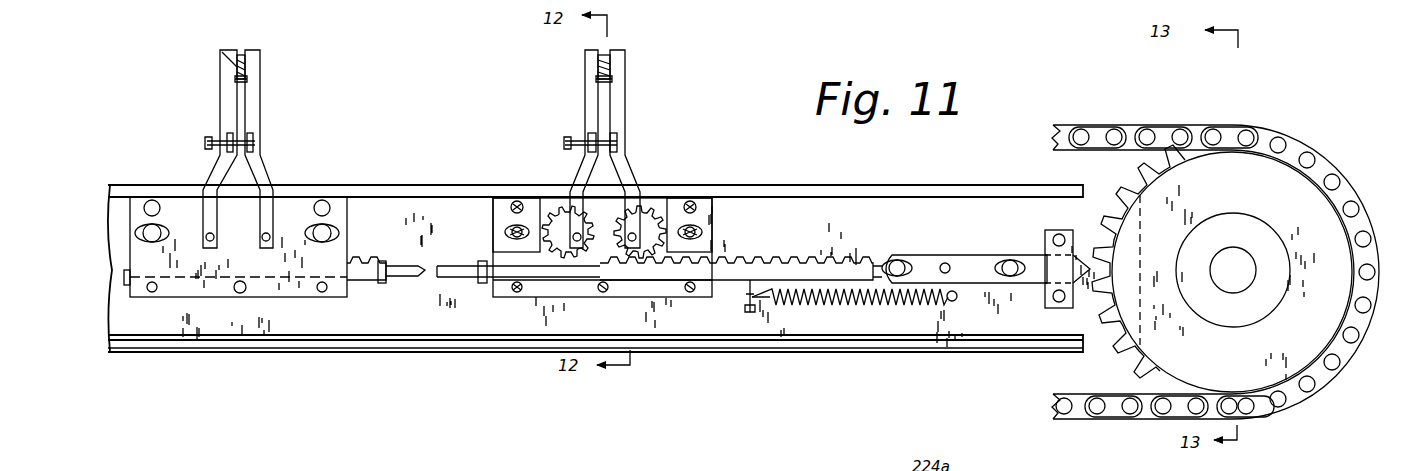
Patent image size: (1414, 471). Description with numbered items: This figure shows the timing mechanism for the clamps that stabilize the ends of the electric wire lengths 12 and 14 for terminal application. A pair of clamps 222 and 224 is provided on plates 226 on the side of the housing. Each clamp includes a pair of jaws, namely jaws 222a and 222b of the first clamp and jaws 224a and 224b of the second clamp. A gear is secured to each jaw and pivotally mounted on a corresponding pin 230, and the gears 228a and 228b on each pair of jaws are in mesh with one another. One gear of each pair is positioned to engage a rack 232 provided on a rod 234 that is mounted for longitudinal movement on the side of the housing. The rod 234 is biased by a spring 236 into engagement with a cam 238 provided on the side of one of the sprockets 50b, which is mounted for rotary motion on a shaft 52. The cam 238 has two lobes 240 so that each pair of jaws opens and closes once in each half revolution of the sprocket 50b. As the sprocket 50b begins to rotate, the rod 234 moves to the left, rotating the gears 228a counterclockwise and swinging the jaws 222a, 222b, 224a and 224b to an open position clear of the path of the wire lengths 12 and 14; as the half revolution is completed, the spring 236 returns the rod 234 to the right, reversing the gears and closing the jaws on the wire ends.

The electric wire length 12 is at (240, 60).
The electric wire length 14 is at (238, 80).
The sprocket 50b is at (1148, 385).
The shaft 52 is at (1236, 265).
The clamp 222 is at (247, 143).
The jaw 222a is at (256, 60).
The jaw 222b is at (222, 67).
The clamp 224 is at (594, 142).
The jaw 224a is at (620, 58).
The jaw 224b is at (588, 67).
The plate 226 is at (296, 210).
The gear 228a is at (645, 210).
The gear 228b is at (560, 210).
The pin 230 is at (266, 242).
The rack 232 is at (775, 260).
The rod 234 is at (978, 262).
The spring 236 is at (872, 300).
The cam 238 is at (1322, 205).
The lobe 240 is at (1248, 135).